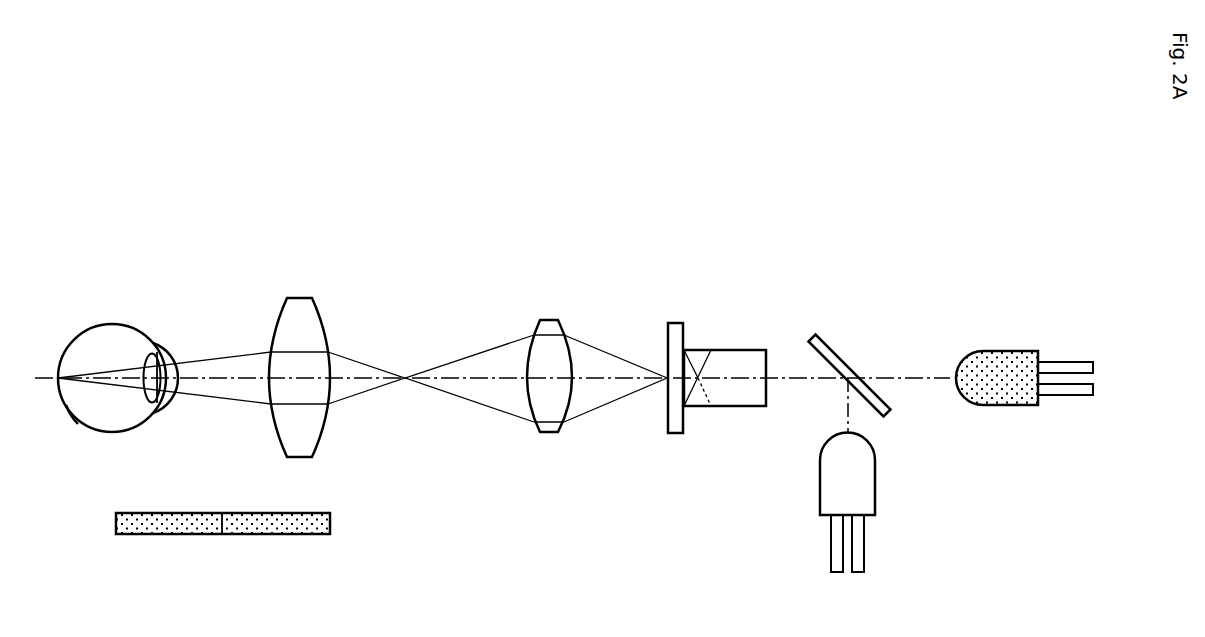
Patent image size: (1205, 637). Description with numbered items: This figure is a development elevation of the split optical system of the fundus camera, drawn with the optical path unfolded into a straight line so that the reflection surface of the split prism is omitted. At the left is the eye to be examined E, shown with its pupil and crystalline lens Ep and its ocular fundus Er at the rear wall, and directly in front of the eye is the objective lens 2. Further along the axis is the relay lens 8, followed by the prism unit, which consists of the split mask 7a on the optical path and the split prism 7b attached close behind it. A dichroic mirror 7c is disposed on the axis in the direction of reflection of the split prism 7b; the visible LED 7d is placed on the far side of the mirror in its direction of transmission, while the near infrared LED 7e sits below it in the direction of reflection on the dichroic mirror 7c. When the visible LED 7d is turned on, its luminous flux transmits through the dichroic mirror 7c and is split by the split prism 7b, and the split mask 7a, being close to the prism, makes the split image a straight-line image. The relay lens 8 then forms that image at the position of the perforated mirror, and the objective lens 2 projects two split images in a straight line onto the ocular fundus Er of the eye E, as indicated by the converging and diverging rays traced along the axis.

The eye to be examined E is at (103, 327).
The pupil / crystalline lens of the eye Ep is at (167, 357).
The ocular fundus Er is at (77, 412).
The objective lens 2 is at (300, 298).
The relay lens 8 is at (548, 320).
The split mask 7a is at (675, 323).
The split prism 7b is at (737, 350).
The dichroic mirror 7c is at (837, 345).
The visible LED 7d is at (993, 351).
The near infrared LED 7e is at (820, 485).